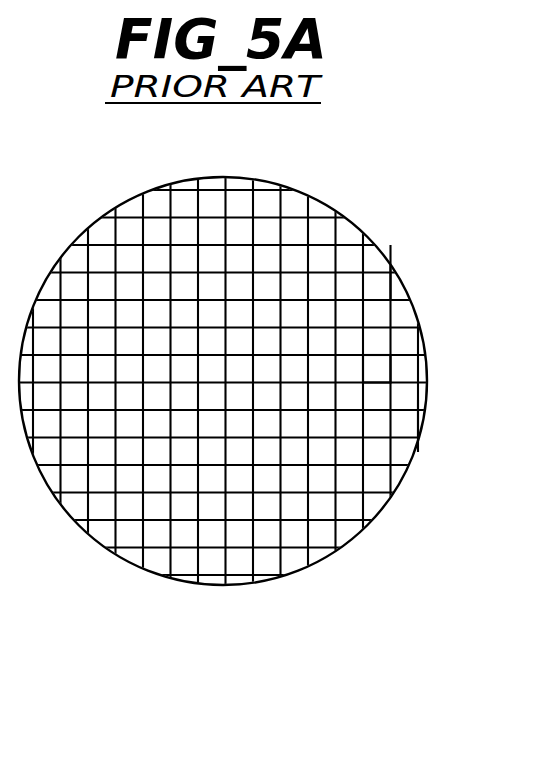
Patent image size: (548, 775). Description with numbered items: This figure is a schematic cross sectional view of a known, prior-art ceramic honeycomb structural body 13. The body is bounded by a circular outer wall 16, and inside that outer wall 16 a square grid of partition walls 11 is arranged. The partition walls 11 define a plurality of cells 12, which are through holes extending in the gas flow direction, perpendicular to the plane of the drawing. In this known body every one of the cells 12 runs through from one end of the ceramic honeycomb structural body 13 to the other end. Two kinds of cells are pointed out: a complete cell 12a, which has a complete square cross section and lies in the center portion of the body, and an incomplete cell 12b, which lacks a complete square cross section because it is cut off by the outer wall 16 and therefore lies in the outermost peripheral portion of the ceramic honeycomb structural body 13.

The partition walls 11 is at (308, 267).
The cells 12 is at (308, 236).
The complete cell 12a is at (372, 370).
The incomplete cell 12b is at (418, 427).
The ceramic honeycomb structural body 13 is at (254, 367).
The outer wall 16 is at (57, 264).